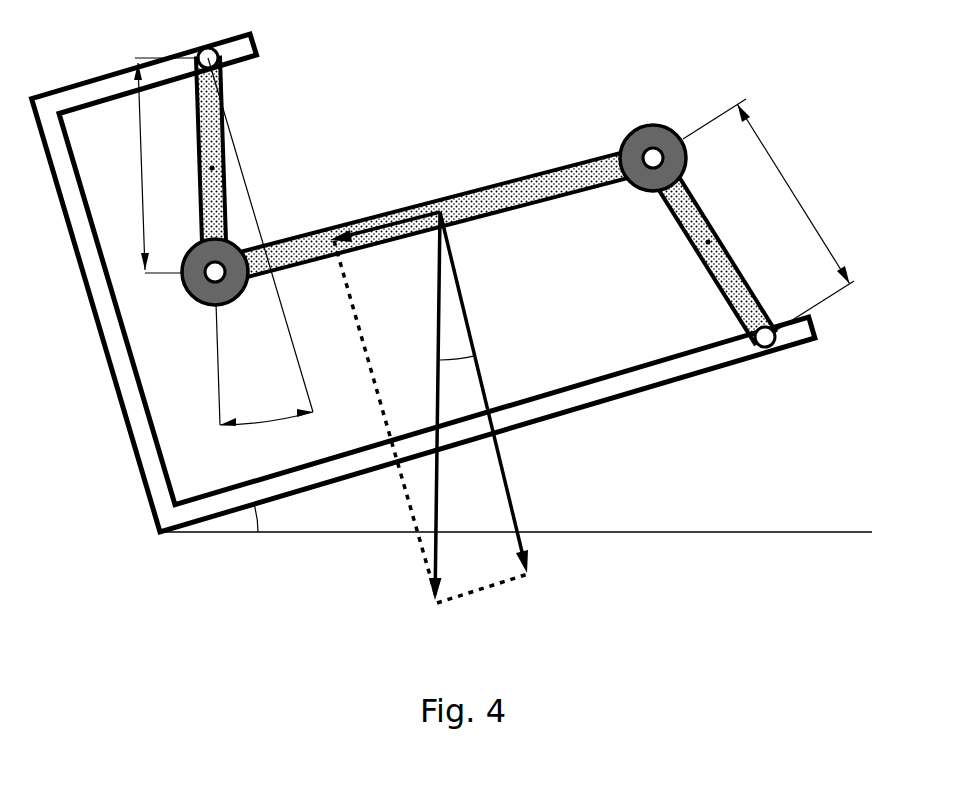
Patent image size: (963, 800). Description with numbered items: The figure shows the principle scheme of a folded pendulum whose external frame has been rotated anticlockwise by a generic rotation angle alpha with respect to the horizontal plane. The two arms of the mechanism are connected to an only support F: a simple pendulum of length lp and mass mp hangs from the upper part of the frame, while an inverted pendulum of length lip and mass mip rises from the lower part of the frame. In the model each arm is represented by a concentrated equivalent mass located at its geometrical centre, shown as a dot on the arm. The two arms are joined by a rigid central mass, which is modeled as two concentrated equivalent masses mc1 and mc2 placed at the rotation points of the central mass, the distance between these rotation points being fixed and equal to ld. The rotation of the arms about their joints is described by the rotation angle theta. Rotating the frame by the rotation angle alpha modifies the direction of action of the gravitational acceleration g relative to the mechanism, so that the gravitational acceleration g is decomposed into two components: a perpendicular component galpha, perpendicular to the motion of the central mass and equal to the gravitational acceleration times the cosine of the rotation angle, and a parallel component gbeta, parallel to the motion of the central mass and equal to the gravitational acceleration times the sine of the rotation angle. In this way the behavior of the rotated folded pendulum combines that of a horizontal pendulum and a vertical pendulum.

The support F is at (615, 385).
The mass of the pendulum mp is at (193, 160).
The length of the pendulum lp is at (156, 165).
The first concentrated equivalent mass of the central mass mc1 is at (199, 288).
The second concentrated equivalent mass of the central mass mc2 is at (651, 136).
The distance between the rotation points of the central mass ld is at (653, 158).
The mass of the inverted pendulum mip is at (709, 249).
The length of the inverted pendulum lip is at (768, 215).
The gravitational acceleration g is at (445, 406).
The component of gravitational acceleration perpendicular to the motion of the centr galpha is at (485, 407).
The component of gravitational acceleration parallel to the motion of the central ma gbeta is at (385, 389).
The rotation angle of the external frame alpha is at (271, 518).
The rotation angle theta is at (260, 254).